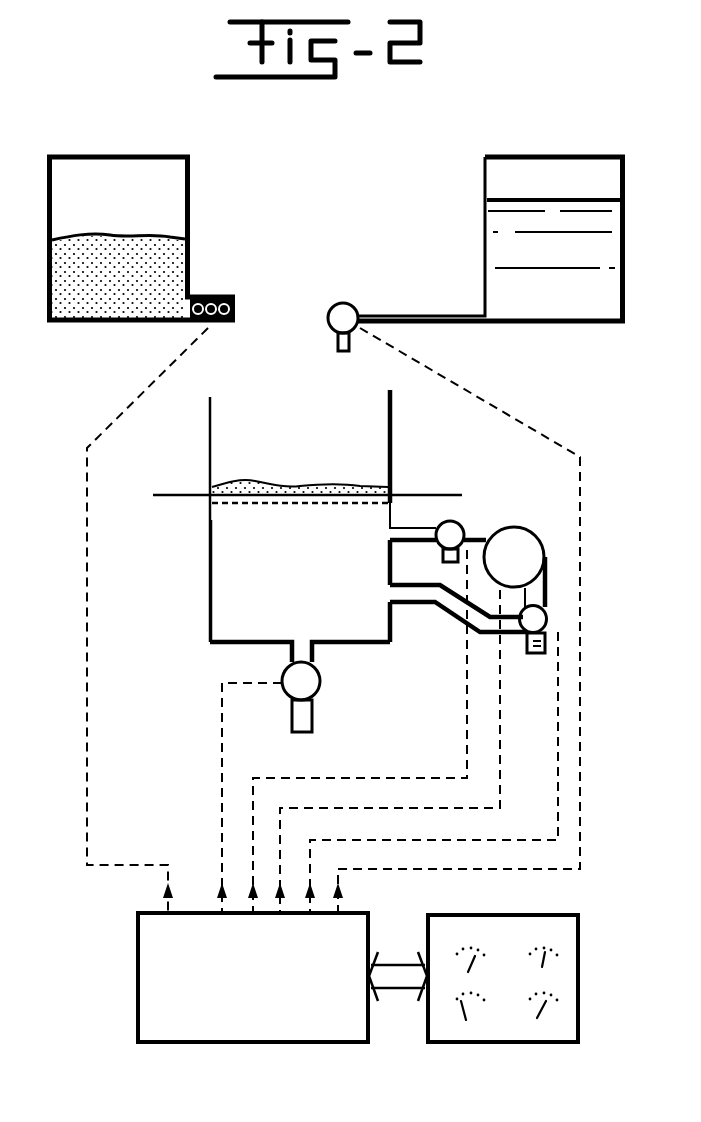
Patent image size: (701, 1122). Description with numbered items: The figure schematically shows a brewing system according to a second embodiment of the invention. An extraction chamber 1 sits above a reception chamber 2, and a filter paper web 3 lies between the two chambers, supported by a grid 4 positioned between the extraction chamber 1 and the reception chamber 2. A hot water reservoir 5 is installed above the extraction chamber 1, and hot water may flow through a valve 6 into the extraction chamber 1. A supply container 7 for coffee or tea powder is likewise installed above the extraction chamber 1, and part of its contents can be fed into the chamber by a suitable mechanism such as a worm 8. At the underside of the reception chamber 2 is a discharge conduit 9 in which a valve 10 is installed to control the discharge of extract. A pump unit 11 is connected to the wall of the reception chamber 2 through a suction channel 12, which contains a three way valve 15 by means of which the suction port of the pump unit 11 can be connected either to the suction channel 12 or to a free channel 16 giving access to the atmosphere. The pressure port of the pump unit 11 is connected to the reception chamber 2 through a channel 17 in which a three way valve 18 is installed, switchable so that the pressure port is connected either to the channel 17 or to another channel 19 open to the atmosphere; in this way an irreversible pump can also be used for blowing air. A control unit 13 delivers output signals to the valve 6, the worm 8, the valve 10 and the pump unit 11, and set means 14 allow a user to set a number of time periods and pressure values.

The extraction chamber 1 is at (392, 434).
The reception chamber 2 is at (226, 598).
The filter paper web 3 is at (460, 495).
The grid 4 is at (267, 504).
The hot water reservoir 5 is at (498, 245).
The valve 6 is at (348, 305).
The supply container 7 is at (188, 243).
The worm 8 is at (222, 300).
The discharge conduit 9 is at (305, 720).
The valve 10 is at (305, 682).
The pump unit 11 is at (533, 560).
The suction channel 12 is at (400, 538).
The control unit 13 is at (172, 1033).
The set means 14 is at (553, 1035).
The three way valve 15 is at (450, 535).
The free channel 16 is at (447, 560).
The channel 17 is at (456, 606).
The three way valve 18 is at (545, 622).
The channel 19 is at (545, 645).